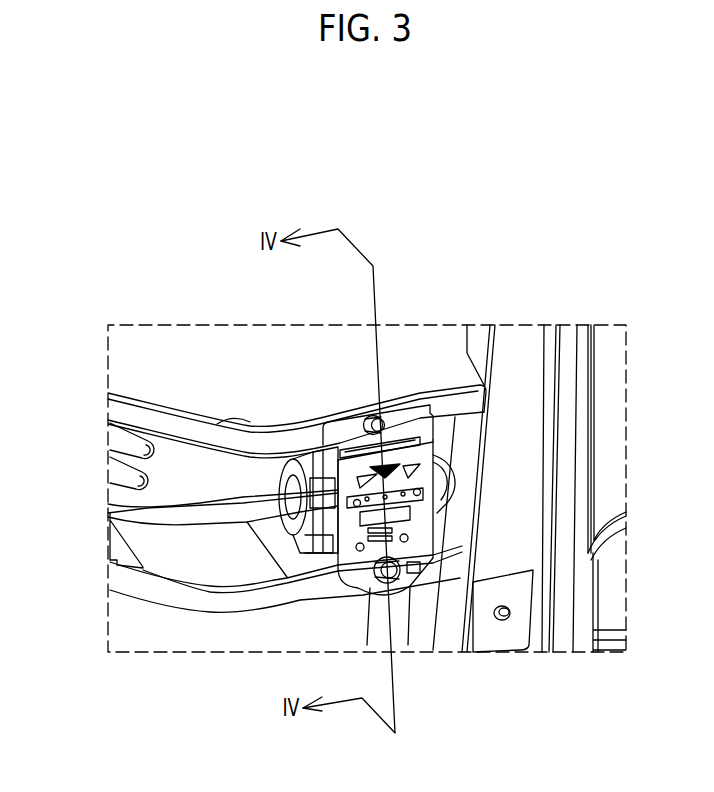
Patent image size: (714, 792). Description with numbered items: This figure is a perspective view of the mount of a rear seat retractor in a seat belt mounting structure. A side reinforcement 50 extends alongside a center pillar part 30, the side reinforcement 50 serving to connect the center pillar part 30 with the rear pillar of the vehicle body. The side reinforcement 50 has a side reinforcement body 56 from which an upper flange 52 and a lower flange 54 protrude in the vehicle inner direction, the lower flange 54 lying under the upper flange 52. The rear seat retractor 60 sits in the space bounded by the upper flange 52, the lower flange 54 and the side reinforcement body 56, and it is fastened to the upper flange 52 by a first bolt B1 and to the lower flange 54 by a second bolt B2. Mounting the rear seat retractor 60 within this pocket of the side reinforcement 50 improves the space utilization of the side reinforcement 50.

The center pillar part 30 is at (508, 652).
The side reinforcement 50 is at (153, 610).
The upper flange 52 is at (150, 418).
The lower flange 54 is at (230, 597).
The side reinforcement body 56 is at (170, 488).
The rear seat retractor 60 is at (433, 513).
The first bolt B1 is at (352, 428).
The second bolt B2 is at (398, 590).